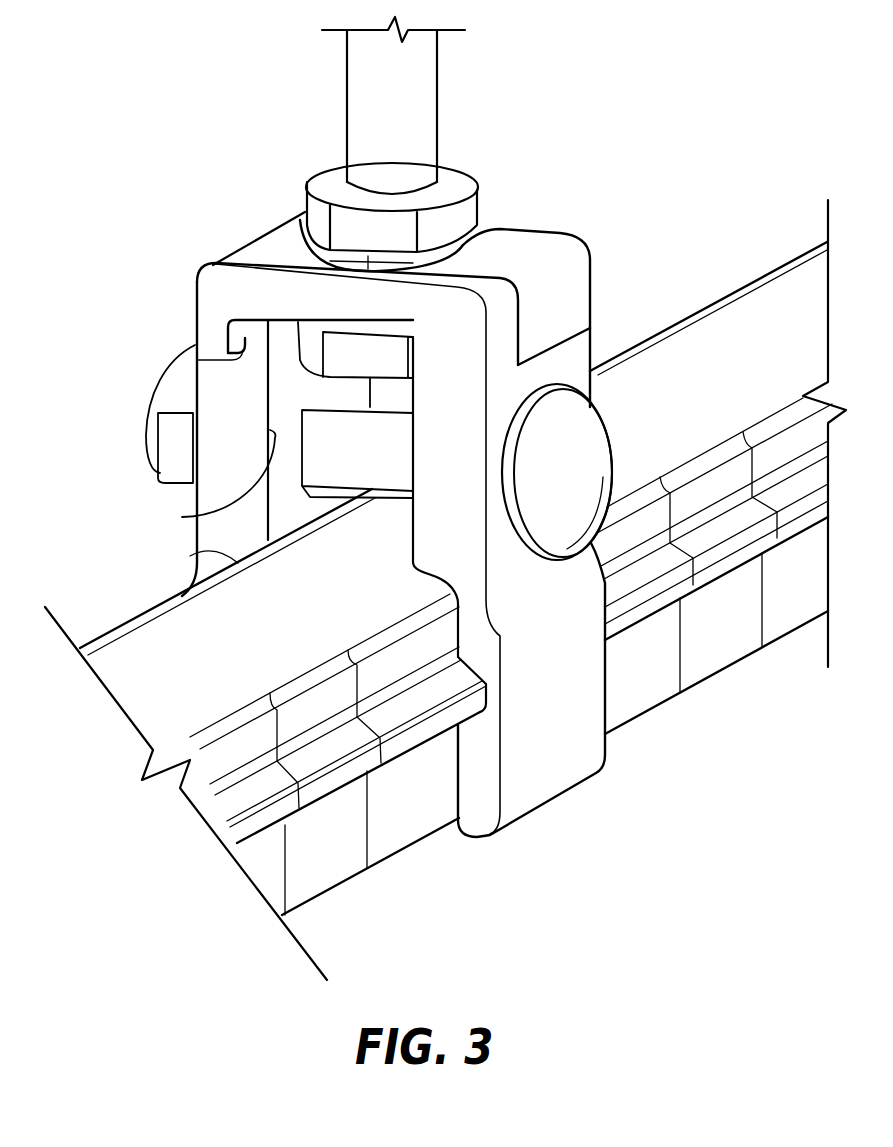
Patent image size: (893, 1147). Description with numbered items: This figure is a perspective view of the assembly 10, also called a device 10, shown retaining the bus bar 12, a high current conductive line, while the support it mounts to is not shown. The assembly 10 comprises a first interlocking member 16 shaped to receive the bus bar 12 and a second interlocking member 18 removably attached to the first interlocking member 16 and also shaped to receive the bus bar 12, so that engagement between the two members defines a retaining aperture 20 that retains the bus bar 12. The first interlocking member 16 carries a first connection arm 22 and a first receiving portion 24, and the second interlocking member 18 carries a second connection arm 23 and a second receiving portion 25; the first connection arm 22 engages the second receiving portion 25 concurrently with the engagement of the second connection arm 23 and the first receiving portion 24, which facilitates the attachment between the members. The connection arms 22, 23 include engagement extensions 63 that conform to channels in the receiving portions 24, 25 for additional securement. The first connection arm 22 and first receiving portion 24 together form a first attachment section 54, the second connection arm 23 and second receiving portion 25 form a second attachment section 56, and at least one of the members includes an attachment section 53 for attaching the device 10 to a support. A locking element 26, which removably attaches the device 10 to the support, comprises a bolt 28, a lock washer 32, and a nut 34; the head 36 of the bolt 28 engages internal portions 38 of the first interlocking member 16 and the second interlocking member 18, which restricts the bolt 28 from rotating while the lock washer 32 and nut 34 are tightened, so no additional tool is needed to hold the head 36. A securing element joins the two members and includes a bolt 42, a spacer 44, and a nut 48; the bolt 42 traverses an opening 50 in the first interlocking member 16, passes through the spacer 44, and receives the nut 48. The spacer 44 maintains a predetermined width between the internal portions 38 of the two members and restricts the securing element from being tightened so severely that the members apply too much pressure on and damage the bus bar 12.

The assembly 10 is at (641, 126).
The bus bar 12 is at (712, 677).
The first interlocking member 16 is at (297, 533).
The second interlocking member 18 is at (606, 765).
The retaining aperture 20 is at (459, 643).
The first connection arm 22 is at (511, 228).
The second connection arm 23 is at (268, 240).
The first receiving portion 24 is at (197, 353).
The second receiving portion 25 is at (600, 322).
The locking element 26 is at (478, 119).
The bolt 28 is at (347, 70).
The lock washer 32 is at (267, 238).
The nut 34 is at (318, 175).
The head 36 is at (381, 364).
The internal portions 38 is at (188, 513).
The bolt 42 is at (146, 428).
The spacer 44 is at (381, 456).
The nut 48 is at (160, 473).
The opening 50 is at (335, 398).
The attachment section 53 is at (206, 246).
The first attachment section 54 is at (588, 229).
The second attachment section 56 is at (214, 557).
The engagement extensions 63 is at (195, 318).